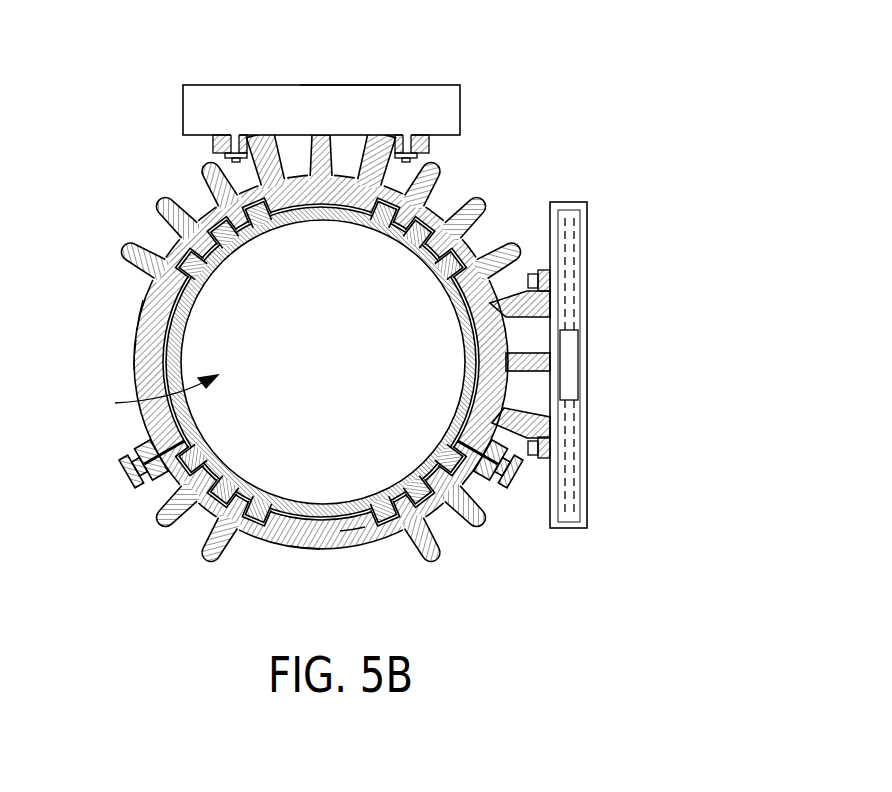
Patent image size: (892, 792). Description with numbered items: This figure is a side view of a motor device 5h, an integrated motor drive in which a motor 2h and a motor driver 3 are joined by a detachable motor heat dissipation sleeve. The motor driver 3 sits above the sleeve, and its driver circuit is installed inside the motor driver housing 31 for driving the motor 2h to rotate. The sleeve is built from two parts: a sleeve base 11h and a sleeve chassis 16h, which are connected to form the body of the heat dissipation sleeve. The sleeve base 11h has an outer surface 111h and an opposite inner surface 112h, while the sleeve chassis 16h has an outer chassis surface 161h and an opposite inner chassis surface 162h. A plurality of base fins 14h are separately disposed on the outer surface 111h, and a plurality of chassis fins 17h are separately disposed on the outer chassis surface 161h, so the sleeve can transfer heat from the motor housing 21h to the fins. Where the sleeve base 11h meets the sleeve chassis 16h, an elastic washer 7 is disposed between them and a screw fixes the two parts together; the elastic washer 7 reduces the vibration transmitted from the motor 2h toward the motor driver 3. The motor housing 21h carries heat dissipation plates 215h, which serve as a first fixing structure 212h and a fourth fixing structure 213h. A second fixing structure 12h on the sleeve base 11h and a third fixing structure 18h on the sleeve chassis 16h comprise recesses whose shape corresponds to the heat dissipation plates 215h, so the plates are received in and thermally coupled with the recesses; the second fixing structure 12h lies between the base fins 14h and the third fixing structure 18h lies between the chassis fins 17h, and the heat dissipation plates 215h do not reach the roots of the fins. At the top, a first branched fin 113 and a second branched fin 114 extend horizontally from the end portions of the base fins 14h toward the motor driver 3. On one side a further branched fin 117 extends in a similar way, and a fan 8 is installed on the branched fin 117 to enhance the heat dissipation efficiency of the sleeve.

The motor device 5h is at (606, 85).
The motor driver 3 is at (230, 108).
The motor driver housing 31 is at (350, 85).
The first branched fin 113 is at (213, 147).
The second branched fin 114 is at (429, 147).
The fan 8 is at (586, 250).
The branched fin 117 is at (551, 279).
The sleeve base 11h is at (165, 300).
The outer surface 111h is at (141, 318).
The inner surface 112h is at (140, 343).
The second fixing structure 12h is at (470, 232).
The base fins 14h is at (163, 210).
The sleeve chassis 16h is at (265, 545).
The outer chassis surface 161h is at (305, 553).
The inner chassis surface 162h is at (350, 548).
The chassis fins 17h is at (208, 560).
The third fixing structure 18h is at (440, 525).
The motor housing 21h is at (475, 358).
The first fixing structure 212h is at (445, 262).
The fourth fixing structure 213h is at (420, 488).
The heat dissipation plates 215h is at (200, 268).
The motor 2h is at (151, 395).
The elastic washer 7 is at (122, 478).